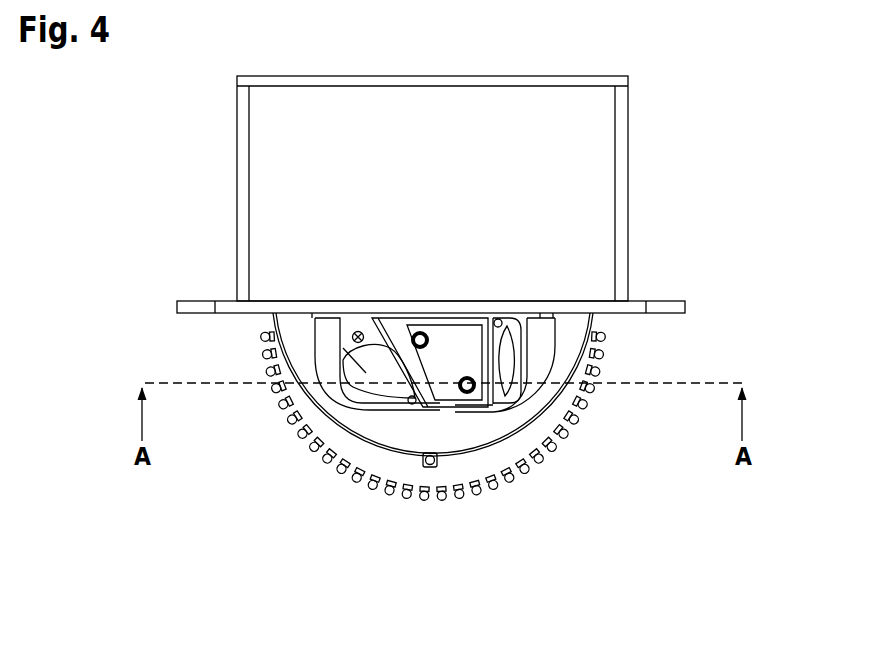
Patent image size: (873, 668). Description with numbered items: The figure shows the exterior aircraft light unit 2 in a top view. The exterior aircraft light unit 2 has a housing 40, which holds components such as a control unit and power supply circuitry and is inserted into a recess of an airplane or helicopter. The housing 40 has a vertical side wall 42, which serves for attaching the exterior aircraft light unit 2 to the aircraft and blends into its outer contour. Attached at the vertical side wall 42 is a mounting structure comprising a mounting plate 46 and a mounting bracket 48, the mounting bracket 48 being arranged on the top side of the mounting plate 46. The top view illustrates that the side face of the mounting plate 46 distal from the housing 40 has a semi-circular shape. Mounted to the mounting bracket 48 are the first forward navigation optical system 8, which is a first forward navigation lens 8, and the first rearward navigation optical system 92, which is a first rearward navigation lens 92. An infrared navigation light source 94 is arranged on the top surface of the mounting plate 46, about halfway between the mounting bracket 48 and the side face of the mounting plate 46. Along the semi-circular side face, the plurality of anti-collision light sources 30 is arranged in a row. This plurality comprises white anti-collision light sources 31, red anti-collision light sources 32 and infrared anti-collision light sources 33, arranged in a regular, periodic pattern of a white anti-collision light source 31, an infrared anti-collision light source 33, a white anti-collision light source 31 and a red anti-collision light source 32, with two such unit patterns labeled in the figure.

The exterior aircraft light unit 2 is at (146, 216).
The first forward navigation optical system 8 is at (367, 373).
The plurality of anti-collision light sources 30 is at (565, 469).
The white anti-collision light source 31 is at (306, 445).
The red anti-collision light source 32 is at (350, 478).
The infrared anti-collision light source 33 is at (320, 456).
The housing 40 is at (620, 149).
The vertical side wall 42 is at (655, 300).
The mounting plate 46 is at (538, 407).
The mounting bracket 48 is at (443, 347).
The first rearward navigation optical system 92 is at (496, 353).
The infrared navigation light source 94 is at (440, 462).